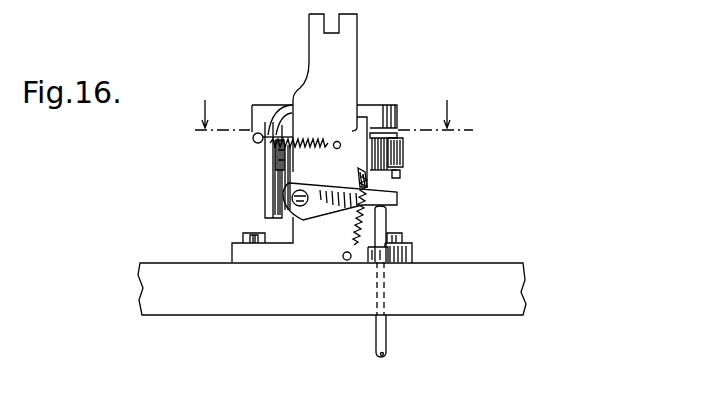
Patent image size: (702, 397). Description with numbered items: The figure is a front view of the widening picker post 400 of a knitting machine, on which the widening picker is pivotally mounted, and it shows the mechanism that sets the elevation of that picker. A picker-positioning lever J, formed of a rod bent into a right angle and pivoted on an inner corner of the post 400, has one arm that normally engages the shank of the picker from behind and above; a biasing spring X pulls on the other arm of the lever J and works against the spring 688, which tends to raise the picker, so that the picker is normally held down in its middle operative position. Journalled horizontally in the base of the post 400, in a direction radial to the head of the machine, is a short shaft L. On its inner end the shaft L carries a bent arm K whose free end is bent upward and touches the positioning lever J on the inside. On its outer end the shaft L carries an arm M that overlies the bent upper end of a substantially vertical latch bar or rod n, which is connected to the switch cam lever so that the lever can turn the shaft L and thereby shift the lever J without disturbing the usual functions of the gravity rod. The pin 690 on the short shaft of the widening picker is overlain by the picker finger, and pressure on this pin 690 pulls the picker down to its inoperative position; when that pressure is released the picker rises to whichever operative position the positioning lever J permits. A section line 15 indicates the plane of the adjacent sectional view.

The picker post 400 is at (341, 86).
The section line 15- 15 is at (335, 120).
The picker-positioning lever J is at (253, 138).
The bent arm K is at (268, 168).
The biasing spring X is at (302, 142).
The short shaft L is at (300, 200).
The arm M is at (398, 196).
The latch bar or rod n is at (385, 225).
The spring 688 is at (398, 148).
The pin 690 is at (402, 175).